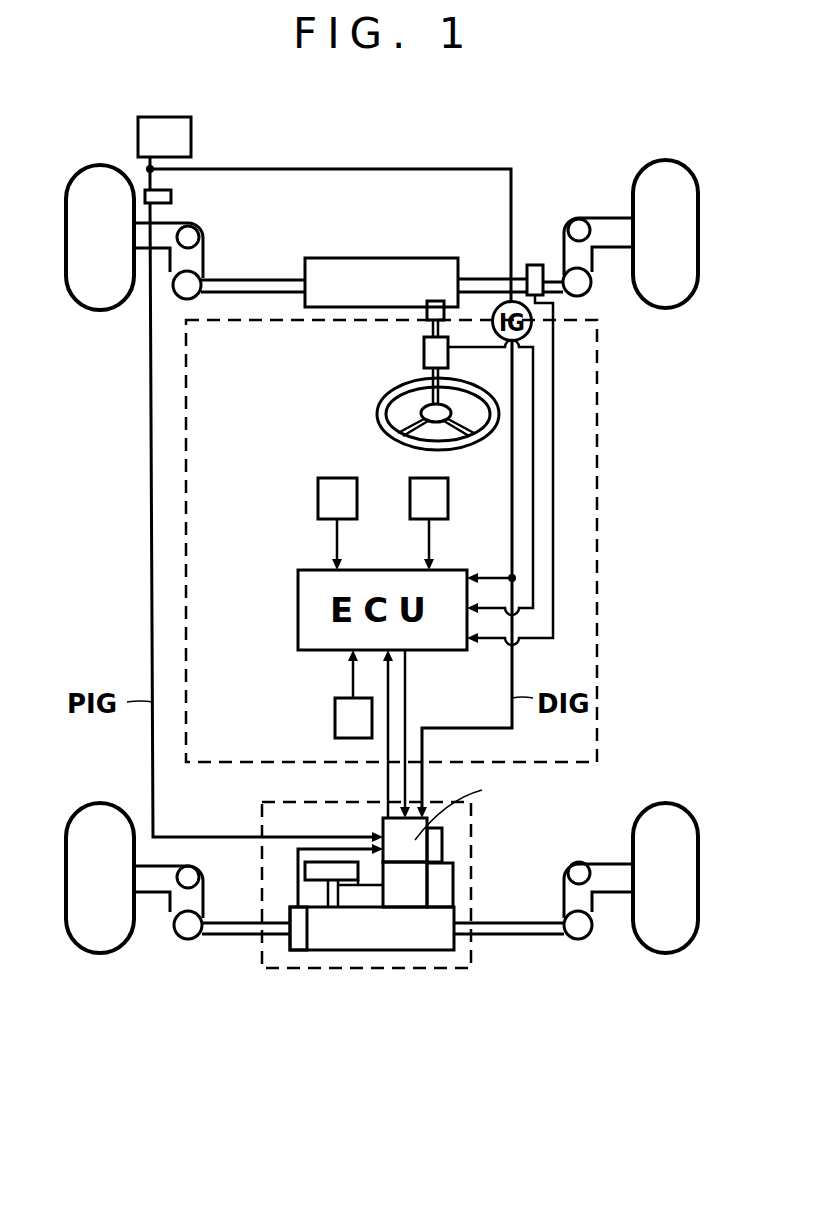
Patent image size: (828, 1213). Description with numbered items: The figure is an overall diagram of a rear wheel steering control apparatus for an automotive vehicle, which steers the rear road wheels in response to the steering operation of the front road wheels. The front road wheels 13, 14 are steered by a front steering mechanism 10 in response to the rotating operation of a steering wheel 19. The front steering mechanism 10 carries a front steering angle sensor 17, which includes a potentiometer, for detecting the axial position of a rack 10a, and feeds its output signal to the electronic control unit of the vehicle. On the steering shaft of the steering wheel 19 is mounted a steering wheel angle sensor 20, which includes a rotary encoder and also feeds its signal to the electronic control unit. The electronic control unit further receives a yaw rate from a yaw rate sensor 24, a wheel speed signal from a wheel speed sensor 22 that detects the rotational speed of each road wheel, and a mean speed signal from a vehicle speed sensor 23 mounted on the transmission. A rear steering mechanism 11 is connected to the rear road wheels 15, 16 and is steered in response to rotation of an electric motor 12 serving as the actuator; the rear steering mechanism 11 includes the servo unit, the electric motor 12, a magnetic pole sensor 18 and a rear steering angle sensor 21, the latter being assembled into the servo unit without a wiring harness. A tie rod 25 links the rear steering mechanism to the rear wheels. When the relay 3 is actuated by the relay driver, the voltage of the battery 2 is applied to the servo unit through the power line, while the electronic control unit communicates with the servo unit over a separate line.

The battery 2 is at (168, 140).
The relay 3 is at (167, 197).
The front steering mechanism 10 is at (320, 272).
The rack 10a is at (238, 285).
The rear steering mechanism 11 is at (402, 910).
The electric motor 12 is at (408, 897).
The front road wheel 13 is at (100, 300).
The front road wheel 14 is at (663, 300).
The rear road wheel 15 is at (97, 942).
The rear road wheel 16 is at (667, 942).
The front steering angle sensor 17 is at (533, 265).
The magnetic pole sensor 18 is at (448, 887).
The steering wheel 19 is at (380, 412).
The steering wheel angle sensor 20 is at (425, 348).
The rear steering angle sensor 21 is at (297, 953).
The wheel speed sensor 22 is at (325, 498).
The vehicle speed sensor 23 is at (437, 497).
The yaw rate sensor 24 is at (348, 717).
The rear tie rod 25 is at (232, 932).